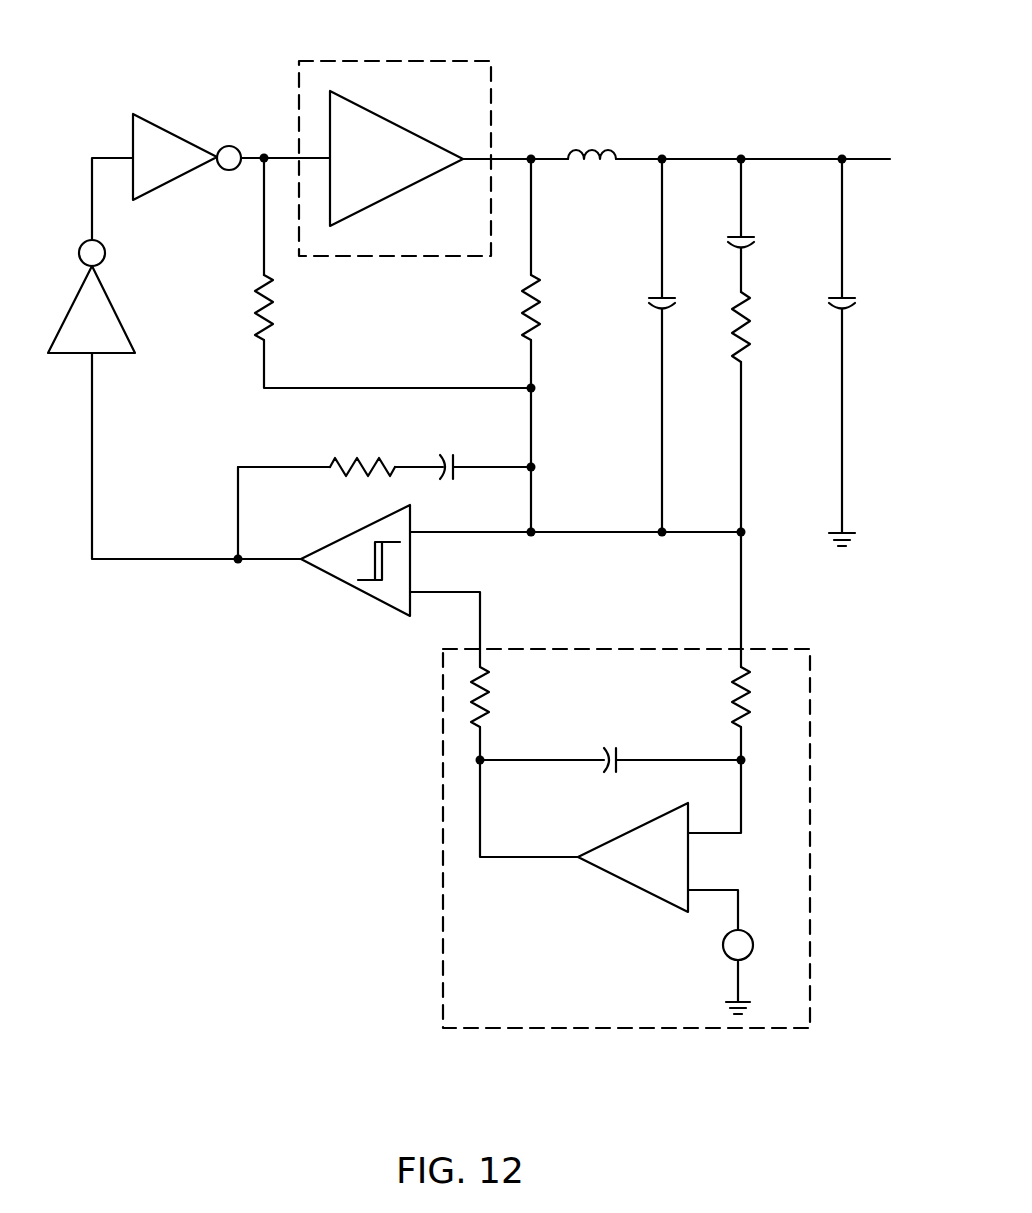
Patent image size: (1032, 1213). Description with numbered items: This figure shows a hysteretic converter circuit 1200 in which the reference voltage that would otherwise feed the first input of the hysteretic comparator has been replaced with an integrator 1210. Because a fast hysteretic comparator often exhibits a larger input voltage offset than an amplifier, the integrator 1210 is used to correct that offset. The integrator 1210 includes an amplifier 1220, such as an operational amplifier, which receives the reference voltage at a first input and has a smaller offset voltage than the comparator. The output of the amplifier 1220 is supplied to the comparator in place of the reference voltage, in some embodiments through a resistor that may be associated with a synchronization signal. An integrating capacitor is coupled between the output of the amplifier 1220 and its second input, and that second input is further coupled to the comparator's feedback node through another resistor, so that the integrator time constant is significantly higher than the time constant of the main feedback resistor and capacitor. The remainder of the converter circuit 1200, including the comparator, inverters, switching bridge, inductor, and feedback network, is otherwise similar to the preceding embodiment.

The hysteretic converter circuit 1200 is at (192, 752).
The integrator 1210 is at (443, 907).
The amplifier 1220 is at (614, 838).